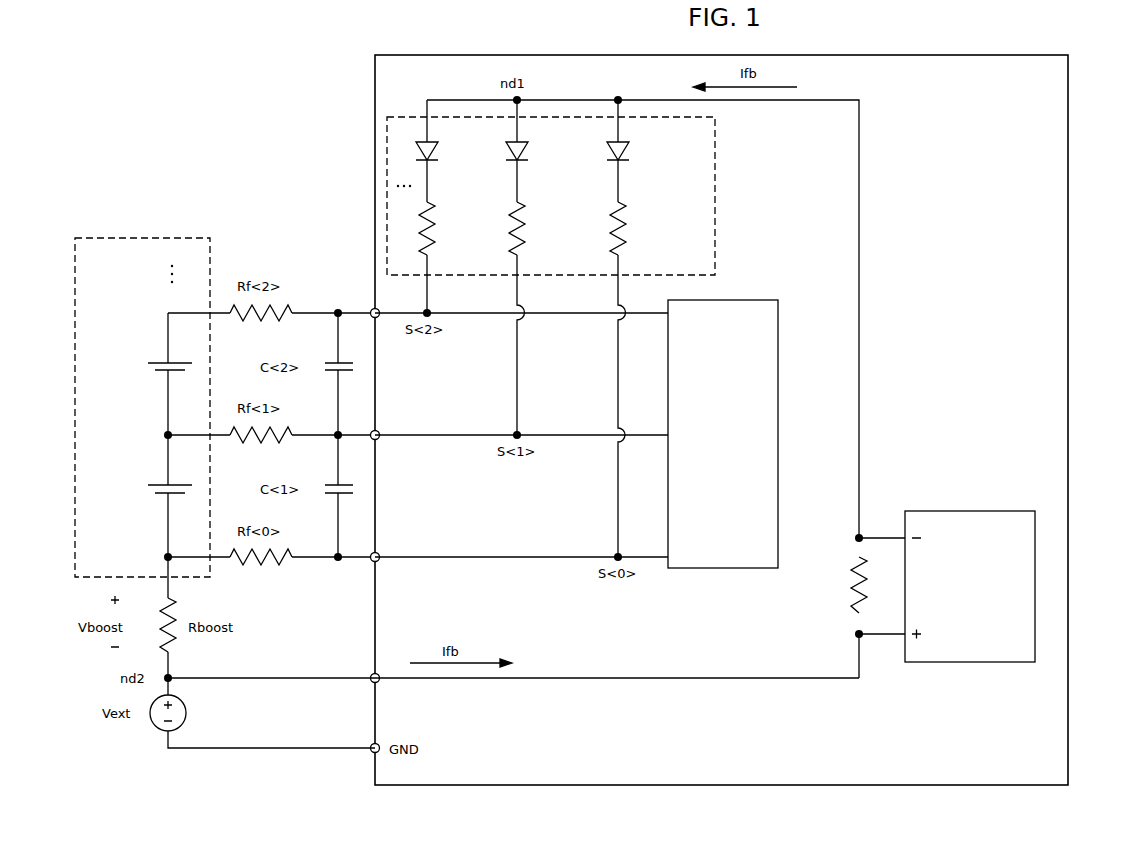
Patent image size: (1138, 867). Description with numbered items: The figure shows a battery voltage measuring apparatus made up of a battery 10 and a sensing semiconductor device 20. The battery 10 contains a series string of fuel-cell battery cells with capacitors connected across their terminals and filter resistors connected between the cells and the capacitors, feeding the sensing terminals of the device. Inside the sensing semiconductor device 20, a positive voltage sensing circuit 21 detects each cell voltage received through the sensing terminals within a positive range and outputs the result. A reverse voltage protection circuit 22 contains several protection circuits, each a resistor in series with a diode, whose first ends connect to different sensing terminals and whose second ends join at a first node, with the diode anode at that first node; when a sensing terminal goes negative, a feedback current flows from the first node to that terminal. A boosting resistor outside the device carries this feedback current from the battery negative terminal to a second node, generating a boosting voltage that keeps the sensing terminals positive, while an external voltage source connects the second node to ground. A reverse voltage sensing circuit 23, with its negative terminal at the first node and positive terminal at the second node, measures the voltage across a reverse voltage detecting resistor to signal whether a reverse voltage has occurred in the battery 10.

The battery 10 is at (175, 238).
The sensing semiconductor device 20 is at (1068, 92).
The positive voltage sensing circuit 21 is at (740, 300).
The reverse voltage protection circuit 22 is at (715, 149).
The reverse voltage sensing circuit 23 is at (1000, 511).